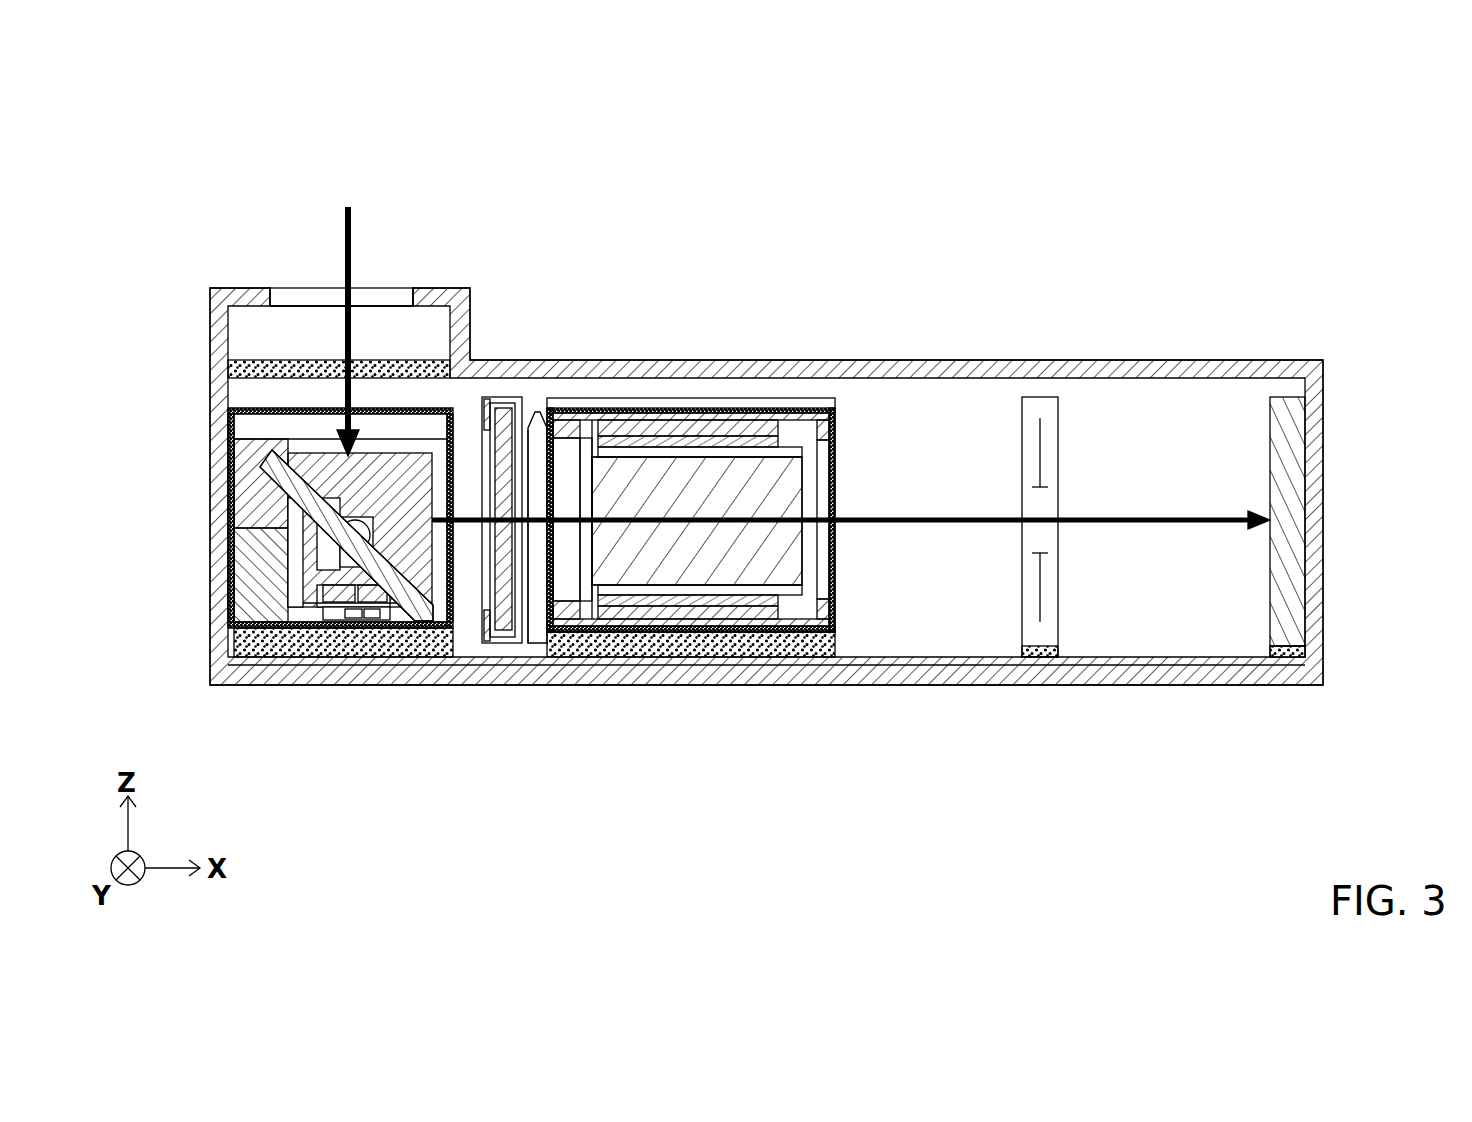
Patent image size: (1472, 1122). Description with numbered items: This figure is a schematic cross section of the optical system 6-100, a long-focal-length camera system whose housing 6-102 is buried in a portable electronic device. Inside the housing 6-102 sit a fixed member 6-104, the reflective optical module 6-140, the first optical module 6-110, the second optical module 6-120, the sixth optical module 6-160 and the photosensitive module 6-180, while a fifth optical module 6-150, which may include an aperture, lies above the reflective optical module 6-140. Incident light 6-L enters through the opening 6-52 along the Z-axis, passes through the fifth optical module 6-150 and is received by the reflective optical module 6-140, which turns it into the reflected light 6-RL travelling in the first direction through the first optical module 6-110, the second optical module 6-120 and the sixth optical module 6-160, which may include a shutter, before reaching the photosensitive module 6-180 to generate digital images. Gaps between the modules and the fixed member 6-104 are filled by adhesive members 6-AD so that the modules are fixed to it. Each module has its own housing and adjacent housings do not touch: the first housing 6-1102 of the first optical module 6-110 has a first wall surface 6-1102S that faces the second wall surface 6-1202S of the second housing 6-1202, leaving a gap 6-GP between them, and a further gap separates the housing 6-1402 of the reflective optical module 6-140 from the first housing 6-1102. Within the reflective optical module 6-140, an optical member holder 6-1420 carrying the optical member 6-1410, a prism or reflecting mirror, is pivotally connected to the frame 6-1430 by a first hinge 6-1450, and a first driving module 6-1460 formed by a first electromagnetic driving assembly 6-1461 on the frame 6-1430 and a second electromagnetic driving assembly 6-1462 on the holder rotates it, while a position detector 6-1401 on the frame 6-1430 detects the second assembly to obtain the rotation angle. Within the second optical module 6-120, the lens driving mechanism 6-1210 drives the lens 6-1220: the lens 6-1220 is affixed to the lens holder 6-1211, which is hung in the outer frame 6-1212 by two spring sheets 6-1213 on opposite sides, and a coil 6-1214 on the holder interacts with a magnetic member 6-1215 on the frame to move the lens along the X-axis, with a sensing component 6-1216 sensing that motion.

The optical system 6-100 is at (218, 152).
The housing 6-102 is at (215, 334).
The fixed member 6-104 is at (1157, 667).
The opening 6-52 is at (282, 289).
The incident light 6-L is at (345, 316).
The fifth optical module 6-150 is at (240, 375).
The reflective optical module 6-140 is at (246, 408).
The housing of the reflective optical module 6-1402 is at (231, 435).
The position detector 6-1401 is at (345, 629).
The frame 6-1430 is at (258, 578).
The optical member 6-1410 is at (318, 478).
The first hinge 6-1450 is at (341, 531).
The optical member holder 6-1420 is at (268, 462).
The first driving module 6-1460 is at (515, 748).
The first electromagnetic driving assembly 6-1461 is at (376, 621).
The second electromagnetic driving assembly 6-1462 is at (455, 621).
The gap 6-GP is at (531, 633).
The first housing 6-1102 is at (655, 396).
The first wall surface 6-1102S is at (528, 412).
The first optical module 6-110 is at (828, 388).
The second optical module 6-120 is at (774, 398).
The second housing 6-1202 is at (704, 412).
The second wall surface 6-1202S is at (538, 414).
The lens driving mechanism 6-1210 is at (1326, 43).
The lens holder 6-1211 is at (655, 600).
The outer frame 6-1212 is at (655, 613).
The spring sheets 6-1213 is at (562, 622).
The coil 6-1214 is at (742, 612).
The magnetic member 6-1215 is at (692, 600).
The sensing component 6-1216 is at (792, 610).
The lens 6-1220 is at (592, 414).
The adhesive members 6-AD is at (255, 646).
The sixth optical module 6-160 is at (1042, 386).
The photosensitive module 6-180 is at (1291, 386).
The reflected light 6-RL is at (851, 506).